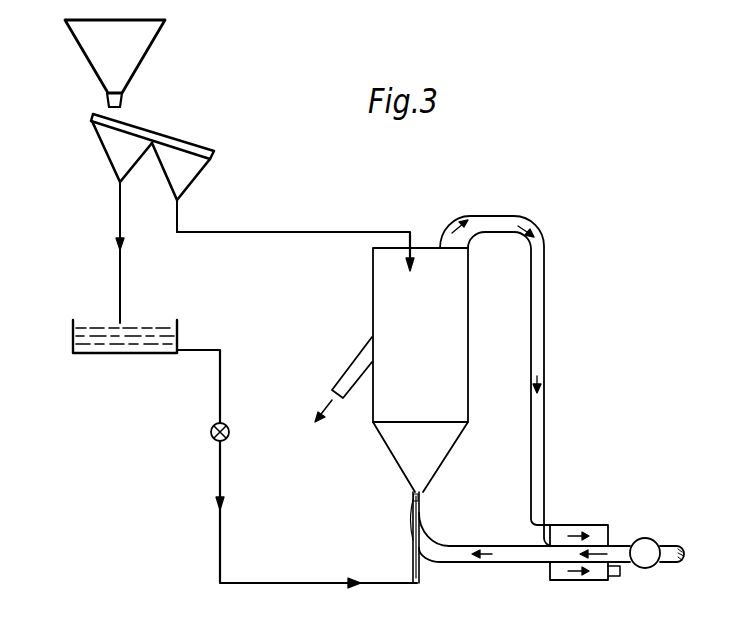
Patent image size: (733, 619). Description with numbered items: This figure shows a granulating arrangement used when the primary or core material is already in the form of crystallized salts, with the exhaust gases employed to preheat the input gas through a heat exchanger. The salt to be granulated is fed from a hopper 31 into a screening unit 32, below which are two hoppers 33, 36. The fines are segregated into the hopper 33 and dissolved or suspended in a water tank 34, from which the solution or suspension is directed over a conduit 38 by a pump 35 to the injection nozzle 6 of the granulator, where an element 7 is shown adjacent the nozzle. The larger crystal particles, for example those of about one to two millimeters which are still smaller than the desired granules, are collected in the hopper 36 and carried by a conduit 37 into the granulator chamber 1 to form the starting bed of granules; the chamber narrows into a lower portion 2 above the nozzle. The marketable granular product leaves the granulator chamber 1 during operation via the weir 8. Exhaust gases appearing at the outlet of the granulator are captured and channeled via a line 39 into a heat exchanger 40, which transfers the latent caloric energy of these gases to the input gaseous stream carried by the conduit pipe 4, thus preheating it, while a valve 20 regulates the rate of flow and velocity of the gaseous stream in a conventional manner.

The granulator chamber 1 is at (452, 311).
The conical bottom 2 is at (436, 452).
The conduit pipe 4 is at (458, 552).
The injection nozzle 6 is at (420, 525).
The nozzle 7 is at (413, 497).
The overflow weir 8 is at (360, 365).
The valve 20 is at (645, 568).
The hopper 31 is at (93, 52).
The screening unit 32 is at (168, 133).
The hopper 33 is at (113, 145).
The water tank 34 is at (75, 342).
The pump 35 is at (230, 434).
The hopper 36 is at (190, 167).
The conduit 37 is at (336, 231).
The conduit 38 is at (283, 581).
The line 39 is at (490, 222).
The heat exchanger 40 is at (590, 524).